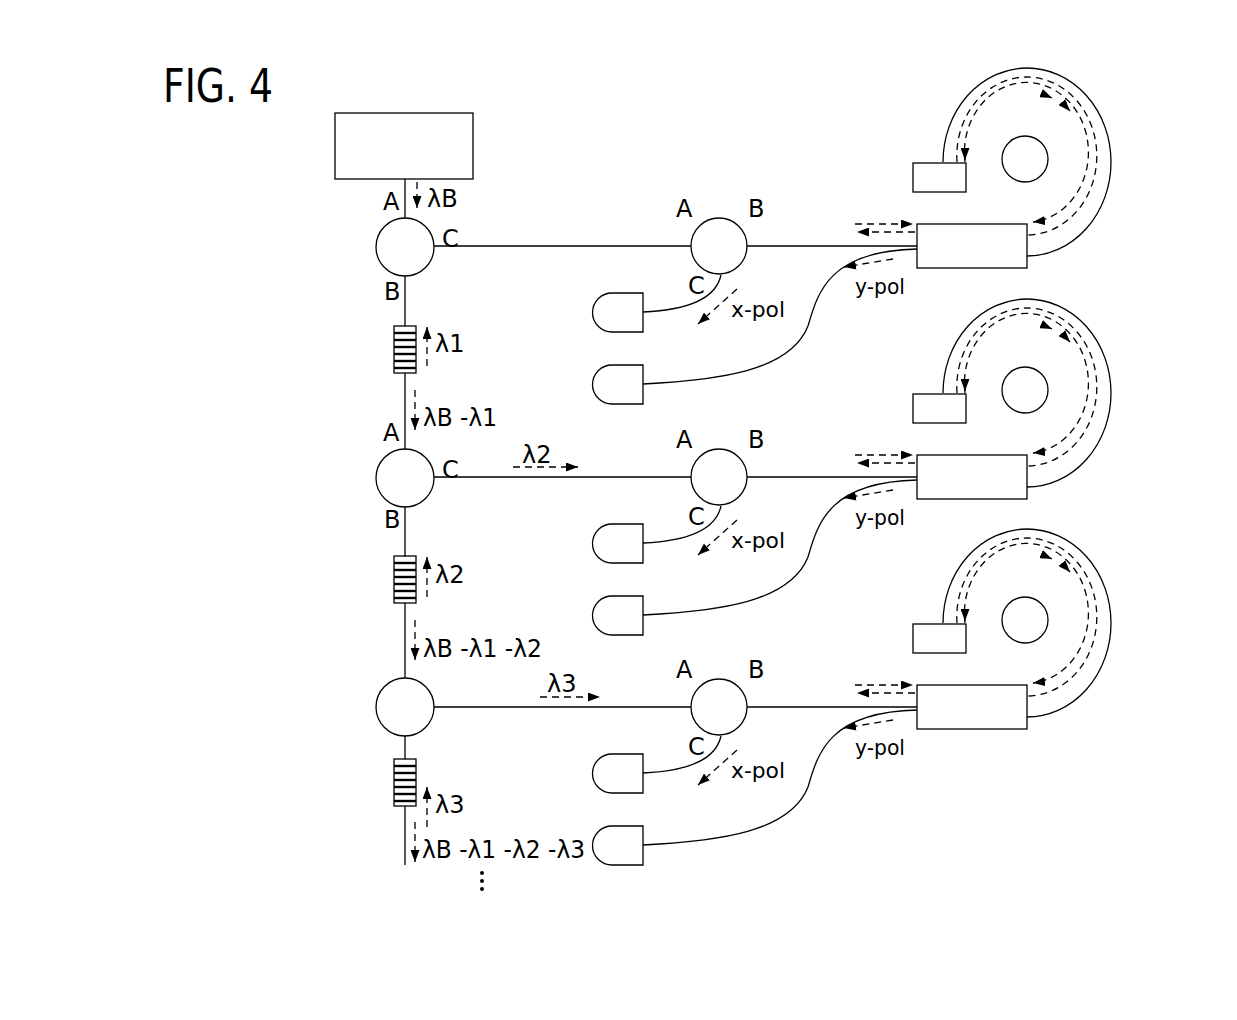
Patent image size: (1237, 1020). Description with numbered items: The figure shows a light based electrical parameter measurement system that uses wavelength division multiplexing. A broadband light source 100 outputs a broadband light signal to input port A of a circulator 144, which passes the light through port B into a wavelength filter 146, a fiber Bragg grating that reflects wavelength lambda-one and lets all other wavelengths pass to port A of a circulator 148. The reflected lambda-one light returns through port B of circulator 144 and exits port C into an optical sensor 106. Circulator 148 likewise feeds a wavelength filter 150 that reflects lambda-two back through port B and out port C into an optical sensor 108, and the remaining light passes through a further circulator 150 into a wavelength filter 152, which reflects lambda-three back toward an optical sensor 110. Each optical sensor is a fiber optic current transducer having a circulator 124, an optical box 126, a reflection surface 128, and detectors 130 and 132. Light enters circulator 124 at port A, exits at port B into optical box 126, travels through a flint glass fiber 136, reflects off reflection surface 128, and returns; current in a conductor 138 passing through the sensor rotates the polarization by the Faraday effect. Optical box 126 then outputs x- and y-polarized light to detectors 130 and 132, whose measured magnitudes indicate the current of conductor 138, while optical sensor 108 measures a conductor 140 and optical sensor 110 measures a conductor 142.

The broadband light source 100 is at (386, 159).
The optical sensor 106 is at (1071, 162).
The optical sensor 108 is at (1082, 393).
The optical sensor 110 is at (1083, 623).
The circulator 124 is at (702, 259).
The optical box 126 is at (955, 259).
The reflection surface 128 is at (923, 189).
The detector 130 is at (611, 325).
The detector 132 is at (611, 397).
The flint glass fiber 136 is at (1108, 141).
The conductor 138 is at (1009, 171).
The conductor 140 is at (1009, 402).
The conductor 142 is at (1009, 632).
The circulator 144 is at (387, 260).
The wavelength filter 146 is at (388, 350).
The circulator 148 is at (387, 491).
The wavelength filter 150 is at (388, 580).
The wavelength filter 152 is at (388, 783).